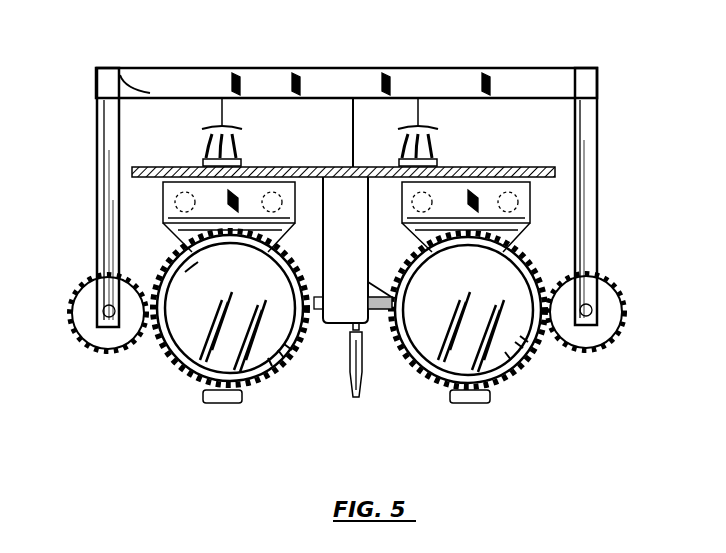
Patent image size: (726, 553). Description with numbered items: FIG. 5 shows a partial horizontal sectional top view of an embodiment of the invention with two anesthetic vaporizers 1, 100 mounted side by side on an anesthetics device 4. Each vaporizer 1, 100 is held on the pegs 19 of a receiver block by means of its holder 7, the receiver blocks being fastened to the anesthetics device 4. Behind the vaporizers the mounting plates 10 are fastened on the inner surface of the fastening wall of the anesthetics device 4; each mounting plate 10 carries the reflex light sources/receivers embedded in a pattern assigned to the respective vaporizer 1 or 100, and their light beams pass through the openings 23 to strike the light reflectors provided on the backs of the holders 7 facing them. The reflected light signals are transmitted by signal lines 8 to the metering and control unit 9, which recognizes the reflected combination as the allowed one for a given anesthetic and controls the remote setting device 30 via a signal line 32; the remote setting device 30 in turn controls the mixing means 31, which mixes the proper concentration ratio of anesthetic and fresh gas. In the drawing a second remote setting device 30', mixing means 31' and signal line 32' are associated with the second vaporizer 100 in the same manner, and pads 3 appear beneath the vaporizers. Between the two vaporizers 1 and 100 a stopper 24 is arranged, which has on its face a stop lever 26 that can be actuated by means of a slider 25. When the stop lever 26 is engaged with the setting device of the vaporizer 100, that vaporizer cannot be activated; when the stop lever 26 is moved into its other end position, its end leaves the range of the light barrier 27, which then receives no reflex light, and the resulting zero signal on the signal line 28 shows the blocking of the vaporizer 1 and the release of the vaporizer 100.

The anesthetic vaporizer 1 is at (272, 365).
The support pad 3 is at (205, 398).
The anesthetics device 4 is at (545, 167).
The holder 7 is at (173, 236).
The signal line 8 is at (222, 104).
The metering and control unit 9 is at (343, 80).
The mounting plate 10 is at (240, 164).
The peg 19 is at (175, 203).
The opening 23 is at (204, 162).
The stopper 24 is at (341, 250).
The slider 25 is at (359, 397).
The stop lever 26 is at (378, 310).
The light barrier 27 is at (378, 285).
The signal line 28 is at (352, 150).
The remote setting device 30 is at (90, 321).
The motor pinion 30' is at (609, 311).
The mixing means 31 is at (216, 318).
The gear wheel 31' is at (507, 313).
The signal line 32 is at (78, 197).
The motor column 32' is at (619, 196).
The anesthetic vaporizer 100 is at (462, 370).